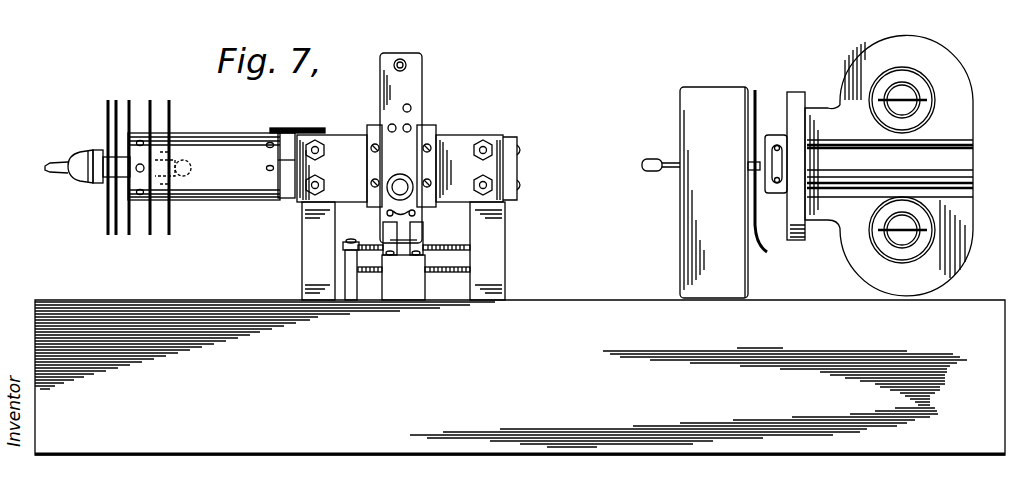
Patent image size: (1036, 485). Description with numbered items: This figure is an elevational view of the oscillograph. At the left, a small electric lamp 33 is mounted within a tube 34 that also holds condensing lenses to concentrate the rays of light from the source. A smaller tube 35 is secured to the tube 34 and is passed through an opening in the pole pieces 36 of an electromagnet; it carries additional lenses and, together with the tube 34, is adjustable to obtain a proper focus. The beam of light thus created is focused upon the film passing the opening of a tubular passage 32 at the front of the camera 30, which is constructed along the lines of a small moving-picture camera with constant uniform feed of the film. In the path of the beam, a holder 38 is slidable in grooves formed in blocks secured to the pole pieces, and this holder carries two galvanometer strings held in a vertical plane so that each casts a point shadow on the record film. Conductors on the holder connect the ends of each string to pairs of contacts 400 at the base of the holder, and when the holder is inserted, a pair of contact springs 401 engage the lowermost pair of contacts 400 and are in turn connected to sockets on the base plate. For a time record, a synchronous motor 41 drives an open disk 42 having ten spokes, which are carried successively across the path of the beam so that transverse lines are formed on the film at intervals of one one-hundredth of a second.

The camera 30 is at (960, 118).
The tubular passage 32 is at (775, 190).
The electric lamp 33 is at (186, 158).
The tube 34 is at (242, 135).
The smaller tube 35 is at (288, 170).
The pole pieces 36 is at (342, 140).
The holder 38 is at (413, 87).
The synchronous motor 41 is at (695, 117).
The open disk 42 is at (770, 181).
The contacts 400 is at (415, 213).
The contact springs 401 is at (417, 240).